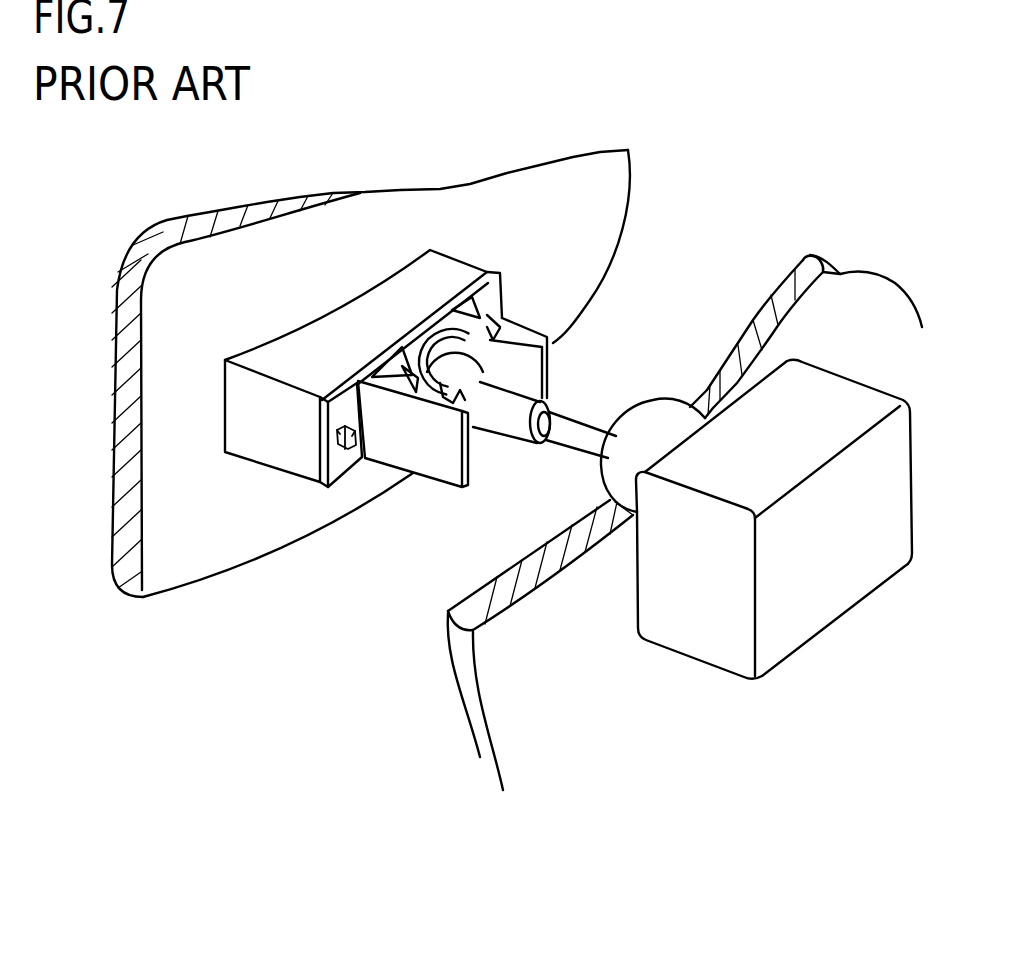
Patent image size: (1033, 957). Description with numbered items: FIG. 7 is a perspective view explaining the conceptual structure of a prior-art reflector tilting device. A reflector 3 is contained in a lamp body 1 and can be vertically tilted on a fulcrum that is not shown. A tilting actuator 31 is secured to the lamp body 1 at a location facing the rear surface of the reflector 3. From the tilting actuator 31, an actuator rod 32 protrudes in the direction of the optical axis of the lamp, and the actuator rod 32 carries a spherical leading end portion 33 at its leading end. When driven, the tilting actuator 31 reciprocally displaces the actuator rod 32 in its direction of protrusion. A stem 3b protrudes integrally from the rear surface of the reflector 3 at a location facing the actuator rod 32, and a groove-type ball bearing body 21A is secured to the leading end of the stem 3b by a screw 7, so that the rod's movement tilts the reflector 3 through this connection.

The lamp body 1 is at (807, 333).
The reflector 3 is at (373, 218).
The stem 3b is at (267, 447).
The screw 7 is at (346, 452).
The groove-type ball bearing body 21A is at (508, 310).
The tilting actuator 31 is at (690, 642).
The actuator rod 32 is at (560, 430).
The spherical leading end portion 33 is at (472, 382).